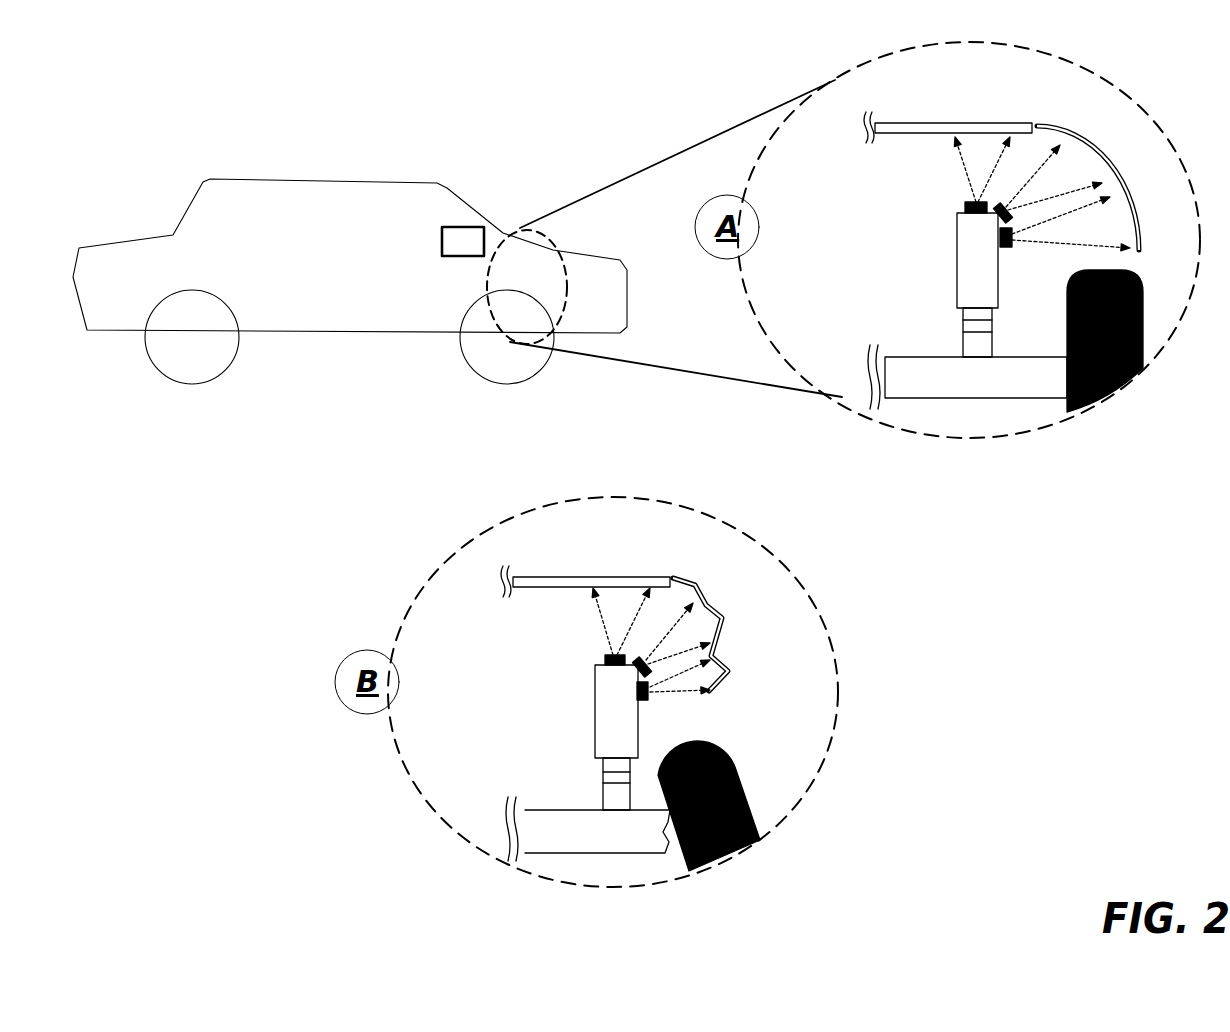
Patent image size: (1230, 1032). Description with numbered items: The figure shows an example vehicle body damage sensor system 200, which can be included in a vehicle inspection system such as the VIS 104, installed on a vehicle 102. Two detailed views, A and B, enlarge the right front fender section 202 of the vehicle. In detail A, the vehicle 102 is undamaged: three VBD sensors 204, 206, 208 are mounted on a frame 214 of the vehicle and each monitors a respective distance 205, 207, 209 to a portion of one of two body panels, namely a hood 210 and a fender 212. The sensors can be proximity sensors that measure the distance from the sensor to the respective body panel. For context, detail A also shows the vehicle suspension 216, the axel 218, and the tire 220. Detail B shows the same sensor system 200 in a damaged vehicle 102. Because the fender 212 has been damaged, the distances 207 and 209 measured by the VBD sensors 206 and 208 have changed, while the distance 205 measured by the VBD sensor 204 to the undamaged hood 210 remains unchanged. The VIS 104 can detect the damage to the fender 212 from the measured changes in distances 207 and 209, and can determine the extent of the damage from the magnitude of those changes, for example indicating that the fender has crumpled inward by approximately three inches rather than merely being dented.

The vehicle body damage sensor system 200 is at (325, 89).
The vehicle 102 is at (350, 281).
The VIS 104 is at (467, 237).
The right front fender section 202 is at (483, 275).
The VBD sensor 204 is at (967, 205).
The distance 205 is at (992, 160).
The VBD sensor 206 is at (997, 213).
The distance 207 is at (1040, 173).
The VBD sensor 208 is at (1000, 243).
The distance 209 is at (1088, 242).
The hood 210 is at (917, 122).
The fender 212 is at (1057, 130).
The frame 214 is at (957, 292).
The vehicle suspension 216 is at (963, 325).
The axel 218 is at (952, 398).
The tire 220 is at (1090, 405).